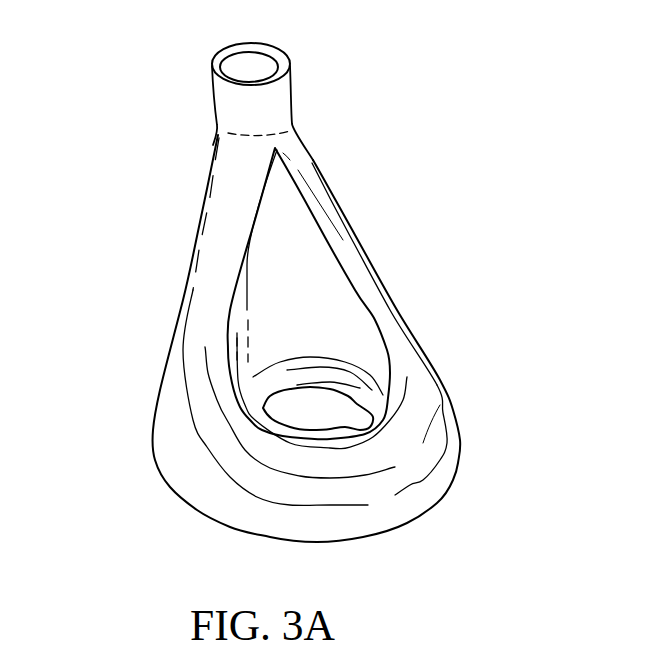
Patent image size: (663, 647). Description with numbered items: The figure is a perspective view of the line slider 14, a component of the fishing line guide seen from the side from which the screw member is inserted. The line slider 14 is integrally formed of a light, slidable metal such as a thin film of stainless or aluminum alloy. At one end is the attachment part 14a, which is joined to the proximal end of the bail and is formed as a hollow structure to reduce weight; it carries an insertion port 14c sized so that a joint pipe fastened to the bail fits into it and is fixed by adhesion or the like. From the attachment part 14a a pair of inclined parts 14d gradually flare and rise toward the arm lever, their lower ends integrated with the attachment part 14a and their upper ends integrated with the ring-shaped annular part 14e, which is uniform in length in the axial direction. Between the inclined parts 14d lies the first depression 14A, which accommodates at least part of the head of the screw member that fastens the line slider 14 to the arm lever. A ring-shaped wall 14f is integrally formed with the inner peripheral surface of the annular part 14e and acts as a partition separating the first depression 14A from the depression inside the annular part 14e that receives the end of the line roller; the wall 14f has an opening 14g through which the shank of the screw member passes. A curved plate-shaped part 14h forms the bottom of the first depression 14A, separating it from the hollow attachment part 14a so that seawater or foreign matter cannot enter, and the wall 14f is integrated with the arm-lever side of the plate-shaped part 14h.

The line slider 14 is at (436, 276).
The attachment part 14a is at (272, 98).
The insertion port 14c is at (258, 48).
The inclined parts 14d is at (342, 242).
The annular part 14e is at (448, 453).
The wall 14f is at (250, 400).
The opening 14g is at (318, 381).
The plate-shaped part 14h is at (285, 252).
The first depression 14A is at (340, 347).